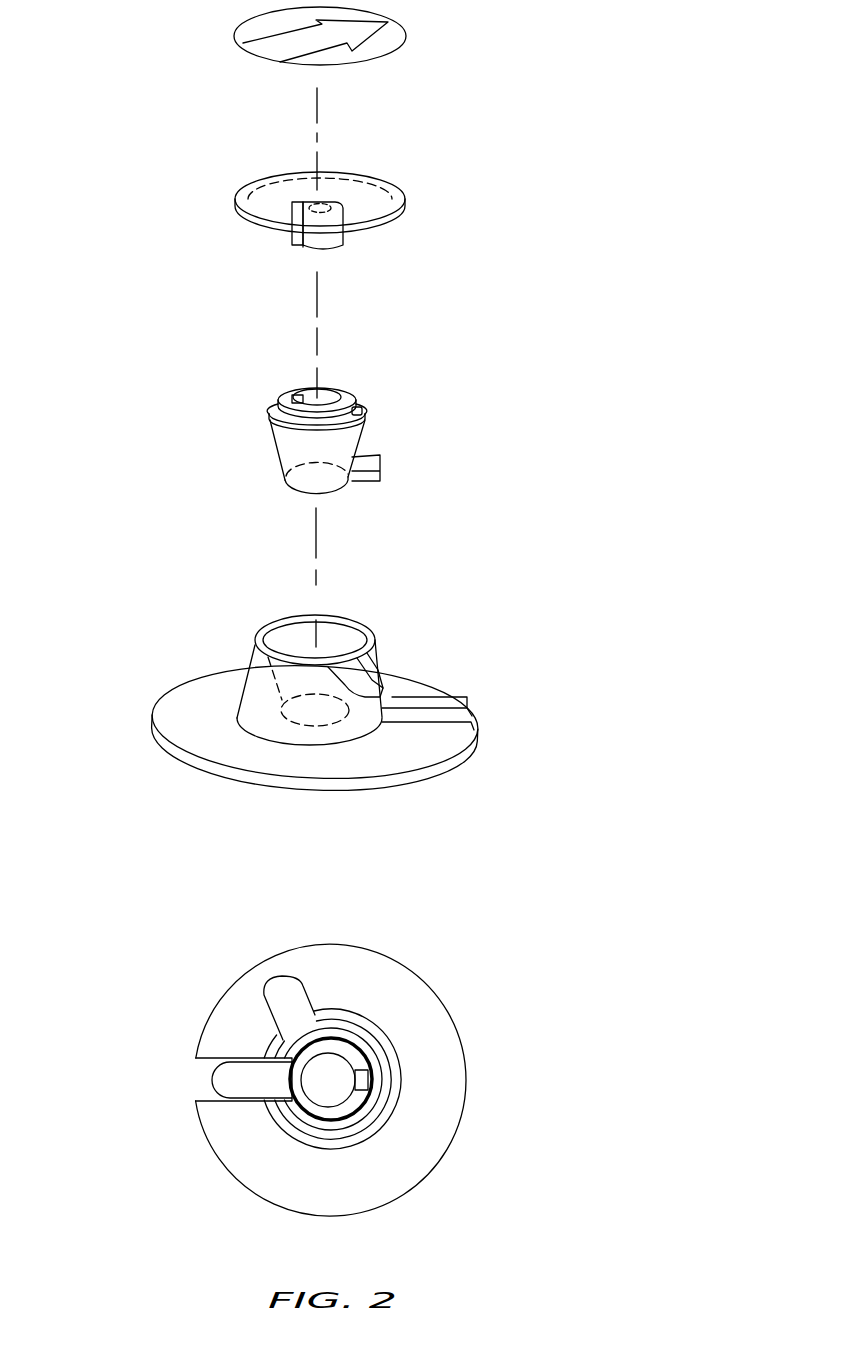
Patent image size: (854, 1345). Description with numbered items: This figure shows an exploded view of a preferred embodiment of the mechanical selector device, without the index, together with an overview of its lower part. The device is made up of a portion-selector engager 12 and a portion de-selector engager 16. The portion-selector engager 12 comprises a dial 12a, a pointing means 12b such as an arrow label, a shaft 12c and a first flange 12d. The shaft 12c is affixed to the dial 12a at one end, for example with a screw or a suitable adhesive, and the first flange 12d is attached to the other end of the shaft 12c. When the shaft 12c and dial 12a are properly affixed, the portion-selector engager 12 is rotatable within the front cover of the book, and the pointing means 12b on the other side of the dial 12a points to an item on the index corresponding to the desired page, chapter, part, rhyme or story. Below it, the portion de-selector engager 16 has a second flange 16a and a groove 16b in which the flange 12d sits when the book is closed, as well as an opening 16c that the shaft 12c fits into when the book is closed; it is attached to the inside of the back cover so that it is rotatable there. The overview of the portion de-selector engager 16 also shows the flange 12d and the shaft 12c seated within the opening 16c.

The portion-selector engager 12 is at (100, 443).
The dial 12a is at (368, 200).
The pointing means 12b is at (377, 38).
The shaft 12c is at (338, 447).
The first flange 12d is at (362, 482).
The portion de-selector engager 16 is at (203, 712).
The second flange 16a is at (368, 683).
The groove 16b is at (385, 690).
The opening 16c is at (320, 635).